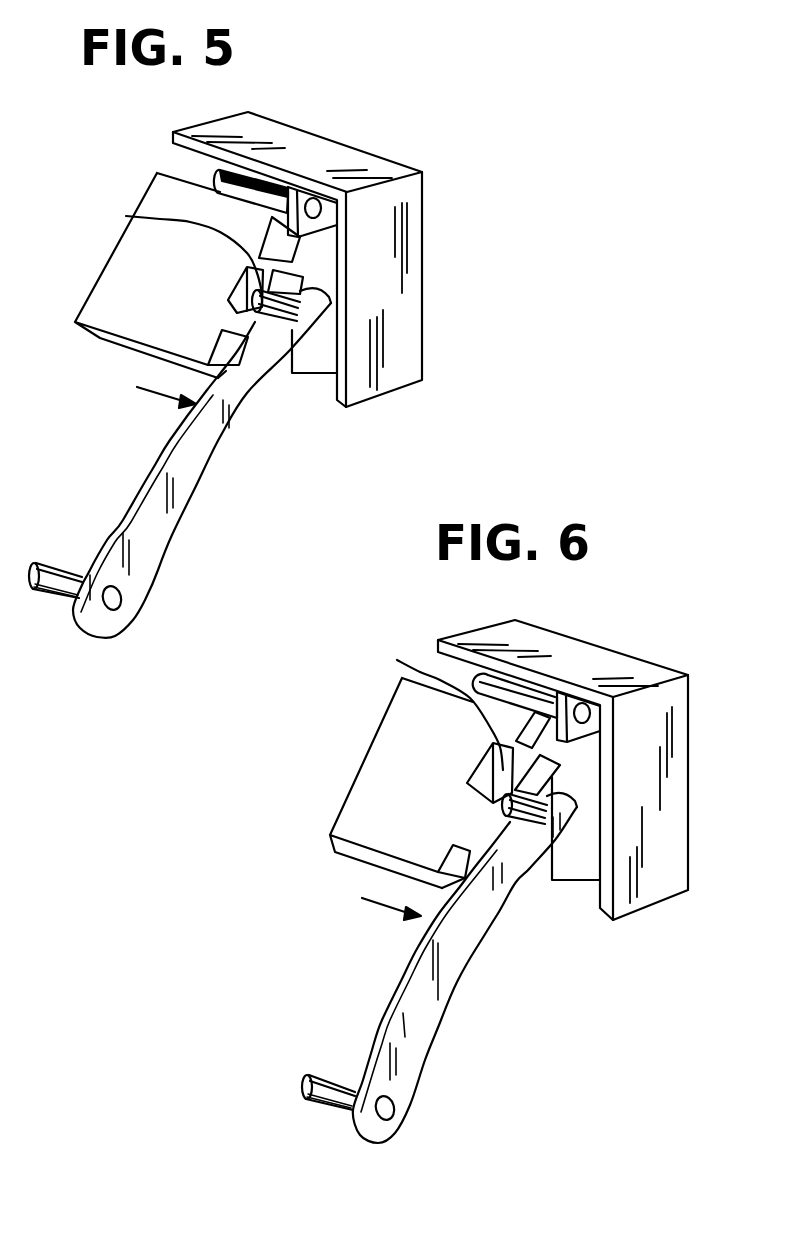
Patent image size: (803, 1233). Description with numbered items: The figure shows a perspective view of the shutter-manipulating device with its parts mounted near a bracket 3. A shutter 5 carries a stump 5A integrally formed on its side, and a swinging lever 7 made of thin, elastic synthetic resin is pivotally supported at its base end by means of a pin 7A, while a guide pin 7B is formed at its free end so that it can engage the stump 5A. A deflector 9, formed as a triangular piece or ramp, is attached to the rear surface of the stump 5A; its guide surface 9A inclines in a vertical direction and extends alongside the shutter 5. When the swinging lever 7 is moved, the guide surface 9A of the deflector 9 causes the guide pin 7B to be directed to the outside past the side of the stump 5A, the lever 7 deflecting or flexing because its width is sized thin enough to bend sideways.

In FIG. 5, the bracket 3 is at (373, 160).
In FIG. 6, the bracket 3 is at (612, 660).
In FIG. 5, the shutter 5 is at (138, 271).
In FIG. 6, the shutter 5 is at (382, 780).
In FIG. 5, the stump 5A is at (293, 267).
In FIG. 6, the stump 5A is at (547, 772).
In FIG. 5, the swinging lever 7 is at (208, 440).
In FIG. 6, the swinging lever 7 is at (453, 957).
In FIG. 5, the lever pin 7A is at (53, 573).
In FIG. 6, the lever pin 7A is at (320, 1080).
In FIG. 5, the guide pin 7B is at (263, 314).
In FIG. 6, the guide pin 7B is at (510, 805).
In FIG. 5, the deflector 9 is at (257, 310).
In FIG. 6, the deflector 9 is at (467, 770).
In FIG. 5, the guide surface 9A is at (182, 231).
In FIG. 6, the guide surface 9A is at (452, 702).